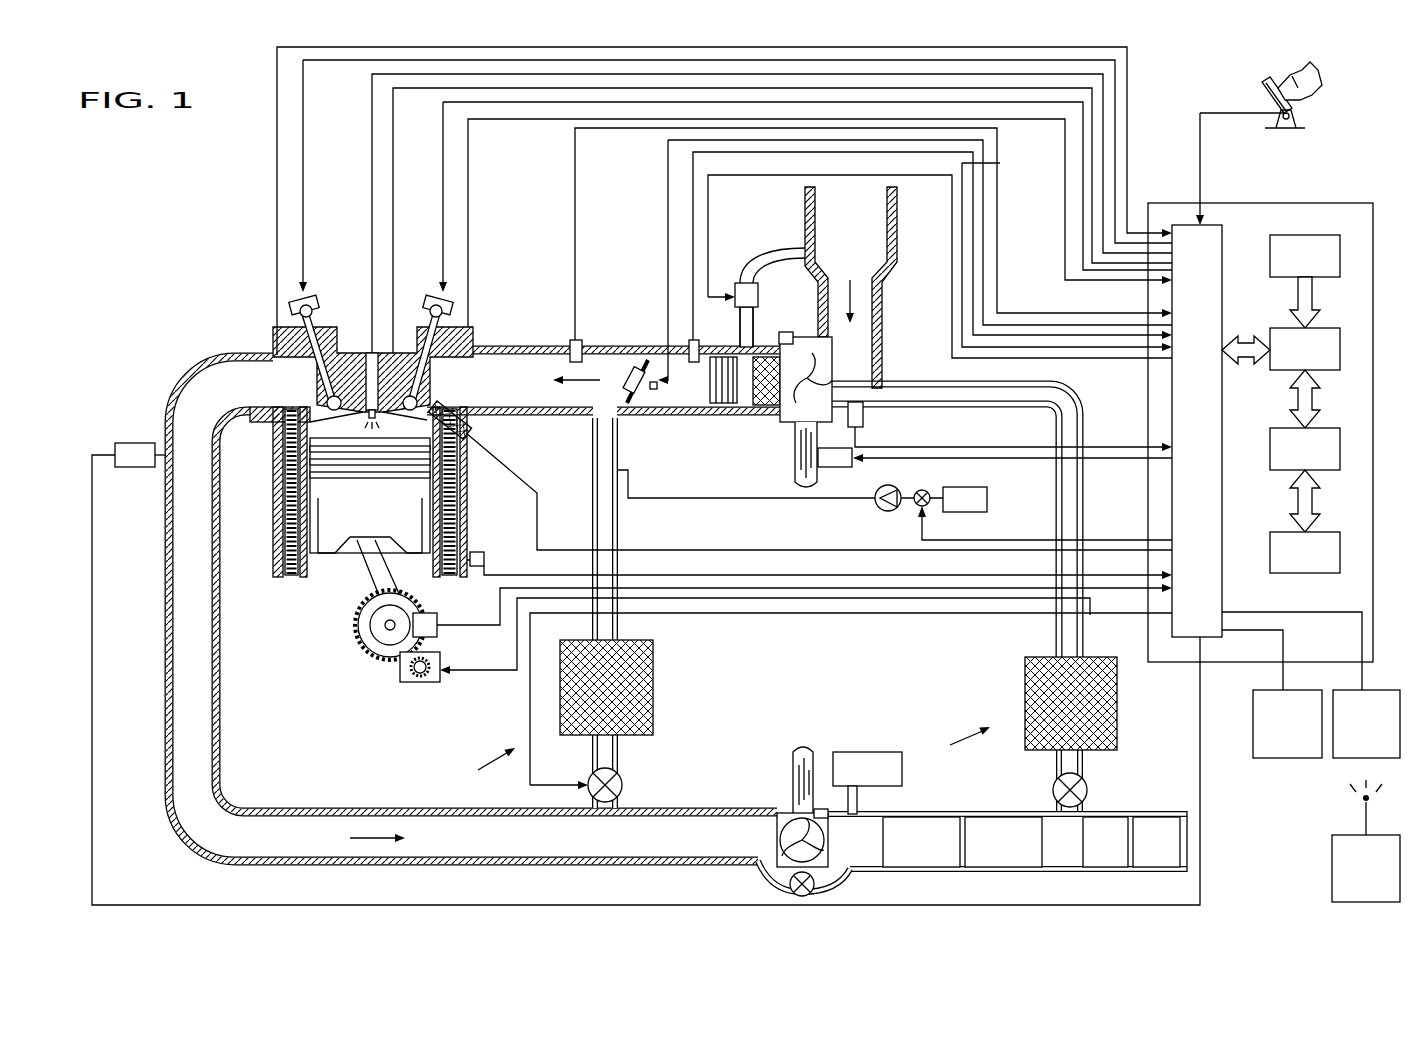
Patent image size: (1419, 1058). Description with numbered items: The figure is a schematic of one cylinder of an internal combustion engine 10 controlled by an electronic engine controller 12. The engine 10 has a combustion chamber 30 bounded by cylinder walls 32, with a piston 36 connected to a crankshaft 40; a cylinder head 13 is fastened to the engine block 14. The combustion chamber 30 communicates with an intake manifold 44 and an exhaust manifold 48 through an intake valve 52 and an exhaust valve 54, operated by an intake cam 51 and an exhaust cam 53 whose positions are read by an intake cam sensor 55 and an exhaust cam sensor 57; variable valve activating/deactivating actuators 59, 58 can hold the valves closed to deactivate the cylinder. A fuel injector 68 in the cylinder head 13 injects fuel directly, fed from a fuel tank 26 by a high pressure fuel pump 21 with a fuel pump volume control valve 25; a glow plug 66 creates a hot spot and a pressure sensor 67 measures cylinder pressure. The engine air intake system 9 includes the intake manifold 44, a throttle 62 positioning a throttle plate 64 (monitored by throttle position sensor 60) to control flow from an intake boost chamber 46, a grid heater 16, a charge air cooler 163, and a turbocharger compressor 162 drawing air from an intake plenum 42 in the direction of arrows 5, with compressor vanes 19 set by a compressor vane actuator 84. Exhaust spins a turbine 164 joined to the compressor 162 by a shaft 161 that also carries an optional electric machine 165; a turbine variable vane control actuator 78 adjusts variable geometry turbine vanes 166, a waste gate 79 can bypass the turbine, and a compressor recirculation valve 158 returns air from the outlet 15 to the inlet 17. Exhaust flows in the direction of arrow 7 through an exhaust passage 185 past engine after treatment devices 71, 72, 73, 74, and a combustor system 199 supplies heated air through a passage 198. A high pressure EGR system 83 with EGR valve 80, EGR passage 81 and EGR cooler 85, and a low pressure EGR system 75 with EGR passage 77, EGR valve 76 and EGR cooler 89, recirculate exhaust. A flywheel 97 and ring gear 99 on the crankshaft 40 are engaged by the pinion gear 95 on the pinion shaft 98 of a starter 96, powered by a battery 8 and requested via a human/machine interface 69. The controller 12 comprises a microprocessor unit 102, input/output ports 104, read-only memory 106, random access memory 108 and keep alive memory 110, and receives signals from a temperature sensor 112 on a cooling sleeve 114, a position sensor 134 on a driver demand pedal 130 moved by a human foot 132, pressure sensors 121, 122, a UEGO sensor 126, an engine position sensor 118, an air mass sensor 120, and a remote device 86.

The arrows 5 is at (873, 296).
The arrow 7 is at (402, 836).
The battery 8 is at (1366, 724).
The engine air intake system 9 is at (645, 263).
The internal combustion engine 10 is at (201, 278).
The electronic engine controller 12 is at (1333, 203).
The cylinder head 13 is at (452, 336).
The engine block 14 is at (278, 438).
The outlet 15 is at (770, 350).
The grid heater 16 is at (722, 400).
The inlet 17 is at (834, 362).
The compressor vanes 19 is at (814, 388).
The high pressure fuel pump 21 is at (888, 486).
The fuel pump volume control valve 25 is at (914, 507).
The fuel tank 26 is at (965, 500).
The combustion chamber 30 is at (312, 495).
The cylinder walls 32 is at (320, 560).
The piston 36 is at (353, 523).
The crankshaft 40 is at (378, 662).
The intake plenum 42 is at (851, 287).
The intake manifold 44 is at (603, 380).
The intake boost chamber 46 is at (694, 385).
The exhaust manifold 48 is at (269, 398).
The intake cam 51 is at (440, 297).
The intake valve 52 is at (414, 398).
The exhaust cam 53 is at (312, 298).
The exhaust valve 54 is at (333, 394).
The intake cam sensor 55 is at (452, 311).
The exhaust cam sensor 57 is at (292, 307).
The variable valve activating/deactivating actuator 58 is at (316, 308).
The variable valve activating/deactivating actuator 59 is at (429, 305).
The throttle position sensor 60 is at (655, 402).
The throttle 62 is at (635, 363).
The throttle plate 64 is at (644, 360).
The glow plug 66 is at (368, 370).
The pressure sensor 67 is at (387, 400).
The fuel injector 68 is at (463, 433).
The human/machine interface 69 is at (1287, 724).
The engine after treatment device 71 is at (921, 842).
The engine after treatment device 72 is at (1003, 842).
The engine after treatment device 73 is at (1105, 842).
The engine after treatment device 74 is at (1156, 842).
The low pressure EGR system 75 is at (957, 742).
The EGR valve 76 is at (1085, 784).
The EGR passage 77 is at (1071, 483).
The turbine variable vane control actuator 78 is at (819, 808).
The waste gate 79 is at (790, 889).
The EGR valve 80 is at (591, 775).
The EGR passage 81 is at (600, 450).
The high pressure EGR system 83 is at (480, 765).
The compressor vane actuator 84 is at (784, 332).
The EGR cooler 85 is at (655, 680).
The remote device 86 is at (1366, 841).
The EGR cooler 89 is at (1118, 700).
The pinion gear 95 is at (428, 685).
The starter 96 is at (430, 683).
The flywheel 97 is at (358, 640).
The pinion shaft 98 is at (412, 678).
The ring gear 99 is at (387, 662).
The microprocessor unit 102 is at (1342, 345).
The input/output ports 104 is at (1225, 233).
The read-only memory 106 is at (1342, 253).
The random access memory 108 is at (1342, 445).
The keep alive memory 110 is at (1342, 547).
The temperature sensor 112 is at (497, 549).
The cooling sleeve 114 is at (292, 485).
The engine position sensor 118 is at (440, 613).
The air mass sensor 120 is at (862, 424).
The pressure sensor 121 is at (572, 342).
The pressure sensor 122 is at (693, 343).
The UEGO sensor 126 is at (116, 447).
The driver demand pedal 130 is at (1266, 90).
The human foot 132 is at (1316, 80).
The position sensor 134 is at (1300, 120).
The compressor recirculation valve 158 is at (735, 283).
The shaft 161 is at (797, 483).
The turbocharger compressor 162 is at (786, 424).
The charge air cooler 163 is at (764, 400).
The turbine 164 is at (783, 810).
The electric machine 165 is at (824, 470).
The variable geometry turbine vanes 166 is at (826, 843).
The exhaust passage 185 is at (870, 868).
The passage 198 is at (862, 805).
The combustor system 199 is at (867, 769).